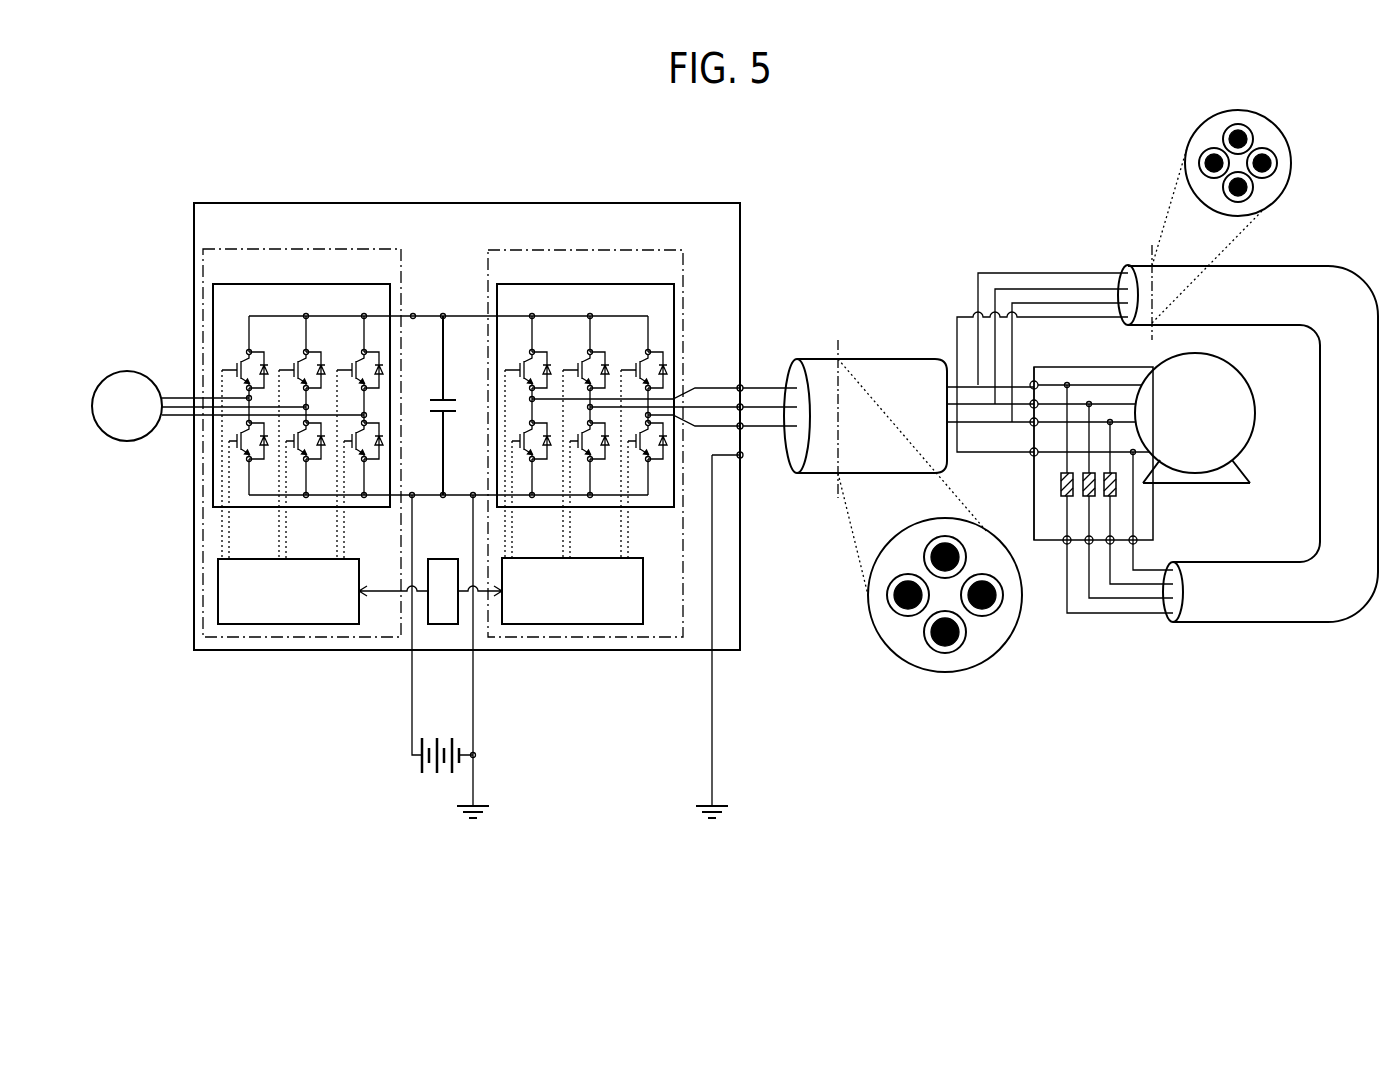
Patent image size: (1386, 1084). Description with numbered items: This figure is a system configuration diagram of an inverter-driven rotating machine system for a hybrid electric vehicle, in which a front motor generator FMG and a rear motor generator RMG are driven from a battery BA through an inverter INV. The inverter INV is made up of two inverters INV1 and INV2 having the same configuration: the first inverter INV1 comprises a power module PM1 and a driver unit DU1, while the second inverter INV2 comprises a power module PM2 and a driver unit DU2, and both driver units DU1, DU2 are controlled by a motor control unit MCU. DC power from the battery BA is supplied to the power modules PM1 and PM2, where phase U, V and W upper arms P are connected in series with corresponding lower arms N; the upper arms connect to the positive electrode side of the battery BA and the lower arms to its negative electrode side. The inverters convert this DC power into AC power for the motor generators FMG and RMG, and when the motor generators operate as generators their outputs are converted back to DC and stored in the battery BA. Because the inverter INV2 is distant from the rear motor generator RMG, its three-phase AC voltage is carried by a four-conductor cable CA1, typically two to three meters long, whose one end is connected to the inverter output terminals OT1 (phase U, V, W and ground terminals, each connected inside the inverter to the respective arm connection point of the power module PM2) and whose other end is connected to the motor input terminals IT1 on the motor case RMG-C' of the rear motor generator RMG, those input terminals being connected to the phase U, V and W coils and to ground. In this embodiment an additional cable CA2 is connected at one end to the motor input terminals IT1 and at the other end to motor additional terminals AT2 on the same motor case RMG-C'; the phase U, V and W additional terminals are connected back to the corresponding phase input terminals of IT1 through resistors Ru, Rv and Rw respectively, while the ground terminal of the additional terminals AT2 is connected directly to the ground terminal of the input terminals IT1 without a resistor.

The inverter INV is at (467, 426).
The first inverter INV1 is at (302, 443).
The second inverter INV2 is at (585, 443).
The power module PM1 is at (301, 421).
The power module PM2 is at (618, 421).
The driver unit DU1 is at (288, 591).
The driver unit DU2 is at (572, 591).
The motor control unit MCU is at (430, 591).
The front motor generator FMG is at (228, 406).
The upper arms P is at (448, 389).
The lower arms N is at (448, 509).
The battery BA is at (575, 636).
The cable CA1 is at (882, 359).
The additional cable CA2 is at (1341, 266).
The inverter output terminals OT1 is at (752, 378).
The motor input terminals IT1 is at (1056, 392).
The rear motor generator RMG is at (1146, 418).
The resistor Ru is at (1061, 485).
The resistor Rv is at (1089, 497).
The resistor Rw is at (1110, 497).
The motor case RMG-C' is at (1142, 468).
The motor additional terminals AT2 is at (1057, 548).